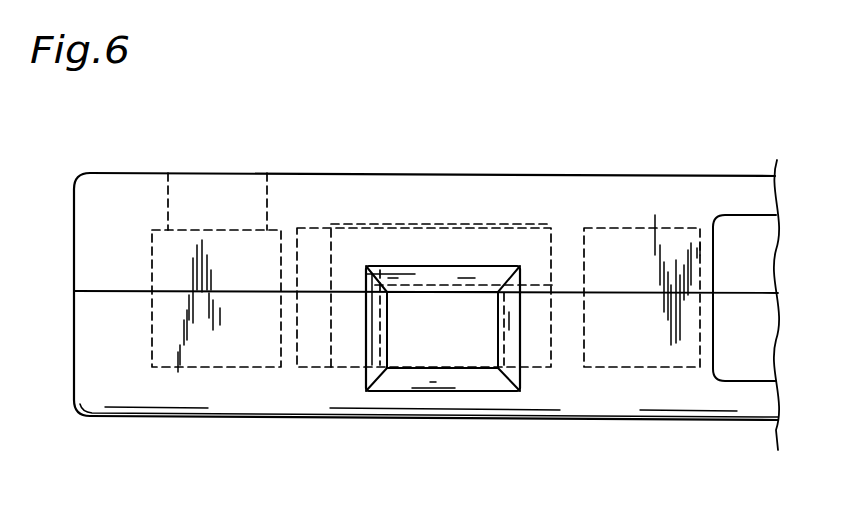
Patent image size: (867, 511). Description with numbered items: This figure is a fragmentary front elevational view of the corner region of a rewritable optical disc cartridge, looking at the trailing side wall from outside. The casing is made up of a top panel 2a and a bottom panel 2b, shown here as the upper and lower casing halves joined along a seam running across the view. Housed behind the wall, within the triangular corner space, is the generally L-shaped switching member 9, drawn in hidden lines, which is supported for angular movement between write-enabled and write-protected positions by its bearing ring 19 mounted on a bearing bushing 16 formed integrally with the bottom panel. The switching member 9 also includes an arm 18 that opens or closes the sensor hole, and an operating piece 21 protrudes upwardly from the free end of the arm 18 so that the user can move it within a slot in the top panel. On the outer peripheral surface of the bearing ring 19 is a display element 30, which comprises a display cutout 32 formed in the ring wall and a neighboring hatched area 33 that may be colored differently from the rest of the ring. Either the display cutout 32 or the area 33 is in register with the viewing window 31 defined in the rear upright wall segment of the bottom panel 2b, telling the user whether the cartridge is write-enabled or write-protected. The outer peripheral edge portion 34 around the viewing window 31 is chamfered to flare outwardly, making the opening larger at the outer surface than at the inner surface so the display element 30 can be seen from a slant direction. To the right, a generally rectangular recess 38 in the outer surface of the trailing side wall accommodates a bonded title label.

The top panel 2a is at (99, 190).
The bottom panel 2b is at (110, 409).
The switching member 9 is at (150, 322).
The bearing bushing 16 is at (560, 235).
The arm 18 is at (228, 355).
The bearing ring 19 is at (585, 231).
The operating piece 21 is at (283, 190).
The display element 30 is at (432, 268).
The viewing window 31 is at (452, 350).
The display cutout 32 is at (385, 328).
The area 33 is at (545, 327).
The outer peripheral edge portion 34 is at (477, 382).
The generally rectangular recess 38 is at (753, 353).